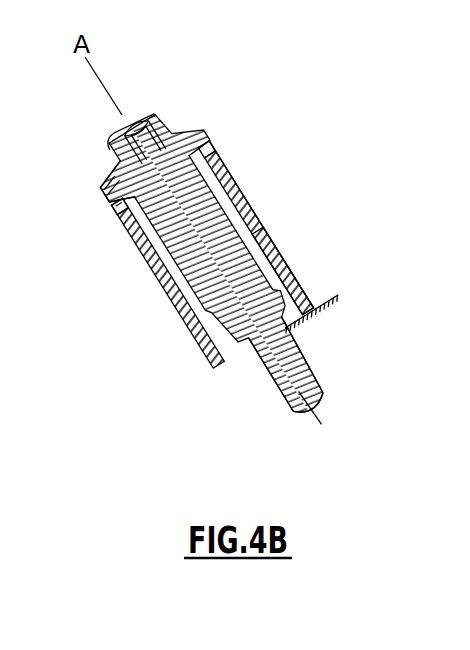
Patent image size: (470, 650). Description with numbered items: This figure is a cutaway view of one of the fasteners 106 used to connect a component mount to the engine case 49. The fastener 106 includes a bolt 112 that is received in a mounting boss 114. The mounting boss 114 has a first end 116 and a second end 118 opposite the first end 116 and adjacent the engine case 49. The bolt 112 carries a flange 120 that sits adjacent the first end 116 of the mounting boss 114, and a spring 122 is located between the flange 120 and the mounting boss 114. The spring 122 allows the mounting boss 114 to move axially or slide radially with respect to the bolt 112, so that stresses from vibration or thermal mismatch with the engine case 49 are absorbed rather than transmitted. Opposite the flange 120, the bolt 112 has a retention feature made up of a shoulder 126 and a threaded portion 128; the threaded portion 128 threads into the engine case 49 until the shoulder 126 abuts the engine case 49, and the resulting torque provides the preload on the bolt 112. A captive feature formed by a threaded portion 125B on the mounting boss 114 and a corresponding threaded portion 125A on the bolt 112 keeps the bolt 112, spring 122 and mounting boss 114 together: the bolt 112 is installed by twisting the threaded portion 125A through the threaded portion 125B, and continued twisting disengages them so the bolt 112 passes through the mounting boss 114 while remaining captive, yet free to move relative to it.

The fastener 106 is at (249, 98).
The bolt 112 is at (176, 104).
The mounting boss 114 is at (181, 315).
The first end 116 is at (258, 162).
The second end 118 is at (314, 262).
The flange 120 is at (106, 182).
The spring 122 is at (117, 208).
The threaded portion 125A is at (303, 281).
The threaded portion 125B is at (238, 178).
The shoulder 126 is at (249, 342).
The threaded portion 128 is at (284, 404).
The engine case 49 is at (332, 318).